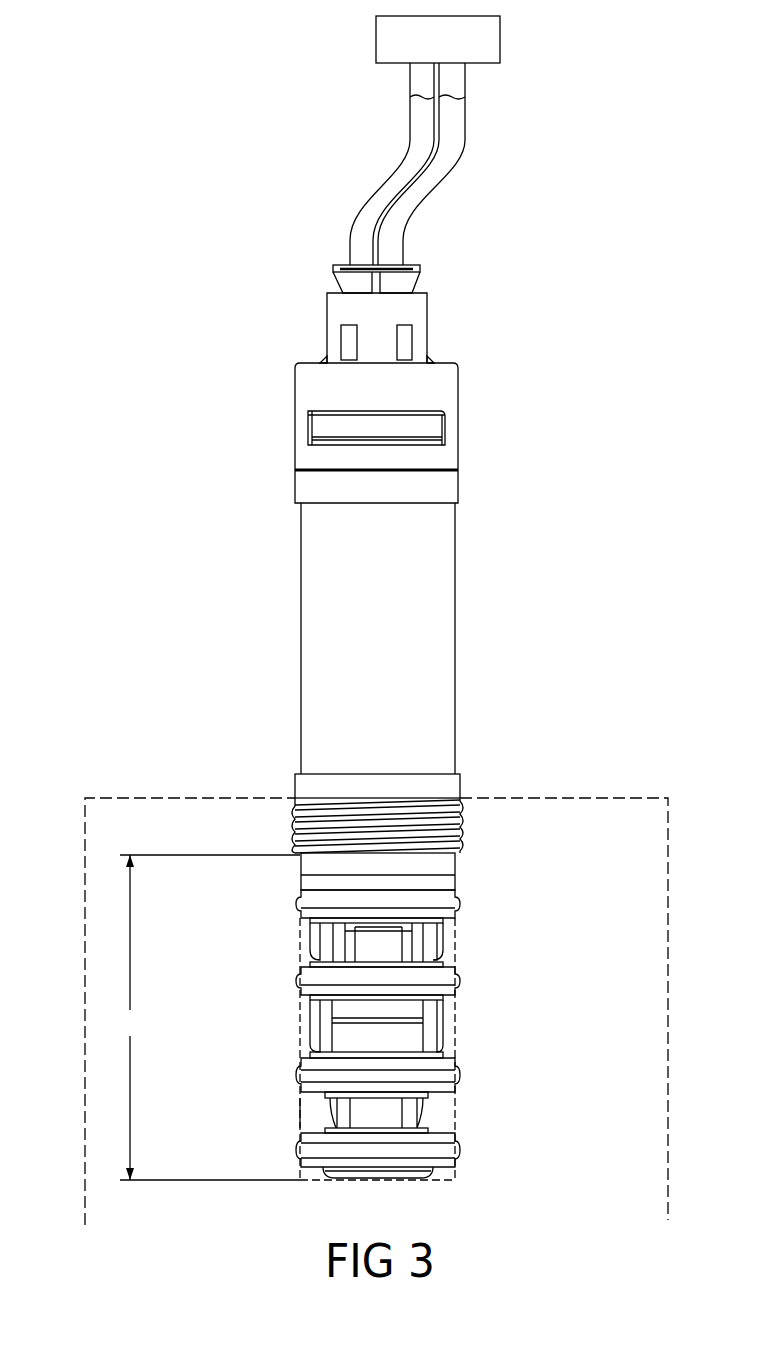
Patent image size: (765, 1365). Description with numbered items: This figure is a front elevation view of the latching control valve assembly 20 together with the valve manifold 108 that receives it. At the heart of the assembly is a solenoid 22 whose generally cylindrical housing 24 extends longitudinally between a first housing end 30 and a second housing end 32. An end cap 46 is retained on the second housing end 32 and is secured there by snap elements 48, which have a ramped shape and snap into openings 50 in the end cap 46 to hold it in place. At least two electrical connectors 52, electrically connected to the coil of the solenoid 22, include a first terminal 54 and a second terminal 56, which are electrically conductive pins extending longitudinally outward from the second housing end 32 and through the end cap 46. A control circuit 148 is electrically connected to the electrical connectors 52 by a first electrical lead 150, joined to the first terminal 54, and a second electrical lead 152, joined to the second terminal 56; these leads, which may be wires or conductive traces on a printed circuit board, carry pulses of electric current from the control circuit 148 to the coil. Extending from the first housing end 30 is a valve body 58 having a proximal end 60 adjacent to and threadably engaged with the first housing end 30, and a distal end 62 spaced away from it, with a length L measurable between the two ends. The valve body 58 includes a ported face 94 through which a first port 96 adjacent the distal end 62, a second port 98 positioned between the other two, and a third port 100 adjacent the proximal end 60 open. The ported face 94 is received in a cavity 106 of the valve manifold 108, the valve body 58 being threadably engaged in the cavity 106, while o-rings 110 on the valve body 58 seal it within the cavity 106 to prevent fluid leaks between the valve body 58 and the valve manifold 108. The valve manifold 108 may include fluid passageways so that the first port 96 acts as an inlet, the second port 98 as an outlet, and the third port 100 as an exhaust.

The latching control valve assembly 20 is at (303, 769).
The solenoid 22 is at (388, 650).
The housing 24 is at (317, 633).
The first housing end 30 is at (478, 849).
The second housing end 32 is at (396, 398).
The end cap 46 is at (313, 383).
The snap elements 48 is at (427, 422).
The openings 50 is at (315, 415).
The electrical connectors 52 is at (392, 255).
The first terminal 54 is at (408, 278).
The second terminal 56 is at (347, 279).
The valve body 58 is at (245, 1025).
The proximal end 60 is at (473, 912).
The distal end 62 is at (457, 1183).
The ported face 94 is at (300, 1060).
The first port 96 is at (443, 1110).
The second port 98 is at (445, 1032).
The third port 100 is at (443, 938).
The cavity 106 is at (300, 1114).
The valve manifold 108 is at (557, 798).
The o-rings 110 is at (300, 902).
The control circuit 148 is at (453, 51).
The first electrical lead 150 is at (443, 168).
The second electrical lead 152 is at (382, 193).